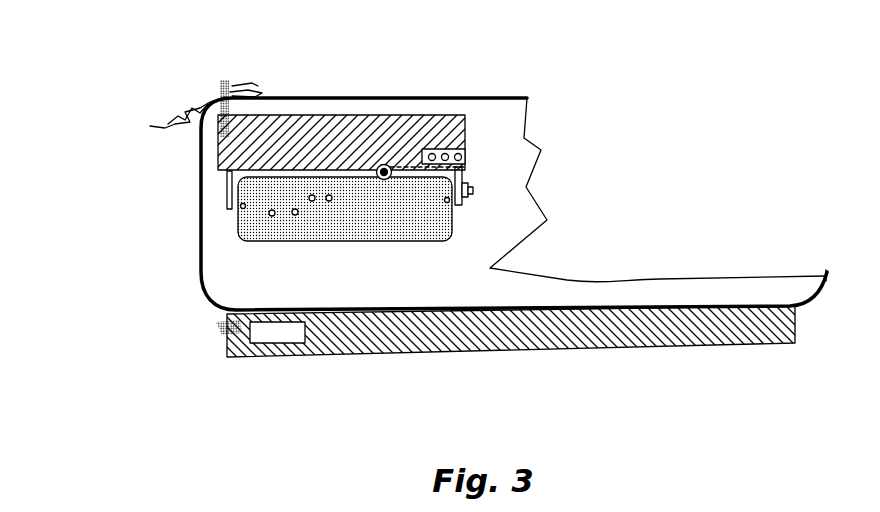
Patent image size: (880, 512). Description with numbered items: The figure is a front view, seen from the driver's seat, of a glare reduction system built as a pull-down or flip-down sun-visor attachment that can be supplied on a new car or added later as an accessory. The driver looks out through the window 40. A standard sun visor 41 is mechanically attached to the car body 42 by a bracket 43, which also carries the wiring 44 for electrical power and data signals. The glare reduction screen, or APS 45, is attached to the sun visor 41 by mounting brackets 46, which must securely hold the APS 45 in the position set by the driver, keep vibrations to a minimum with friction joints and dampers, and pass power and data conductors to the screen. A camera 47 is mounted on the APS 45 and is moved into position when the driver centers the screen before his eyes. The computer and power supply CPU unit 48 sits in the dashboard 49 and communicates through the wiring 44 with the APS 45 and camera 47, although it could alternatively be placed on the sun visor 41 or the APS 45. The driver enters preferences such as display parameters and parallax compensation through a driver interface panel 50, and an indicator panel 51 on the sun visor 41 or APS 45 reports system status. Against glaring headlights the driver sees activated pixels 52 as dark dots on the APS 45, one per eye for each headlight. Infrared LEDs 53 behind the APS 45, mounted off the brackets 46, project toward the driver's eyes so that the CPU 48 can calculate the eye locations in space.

The window 40 is at (213, 237).
The sun visor 41 is at (467, 125).
The car body 42 is at (262, 93).
The bracket 43 is at (190, 102).
The wiring 44 is at (237, 84).
The glare reduction screen (APS) 45 is at (437, 213).
The mounting brackets 46 is at (227, 193).
The camera 47 is at (386, 168).
The CPU unit 48 is at (280, 338).
The dashboard 49 is at (400, 350).
The driver interface panel 50 is at (473, 189).
The indicator panel 51 is at (467, 155).
The activated pixels 52 is at (310, 198).
The infrared LEDs 53 is at (248, 208).